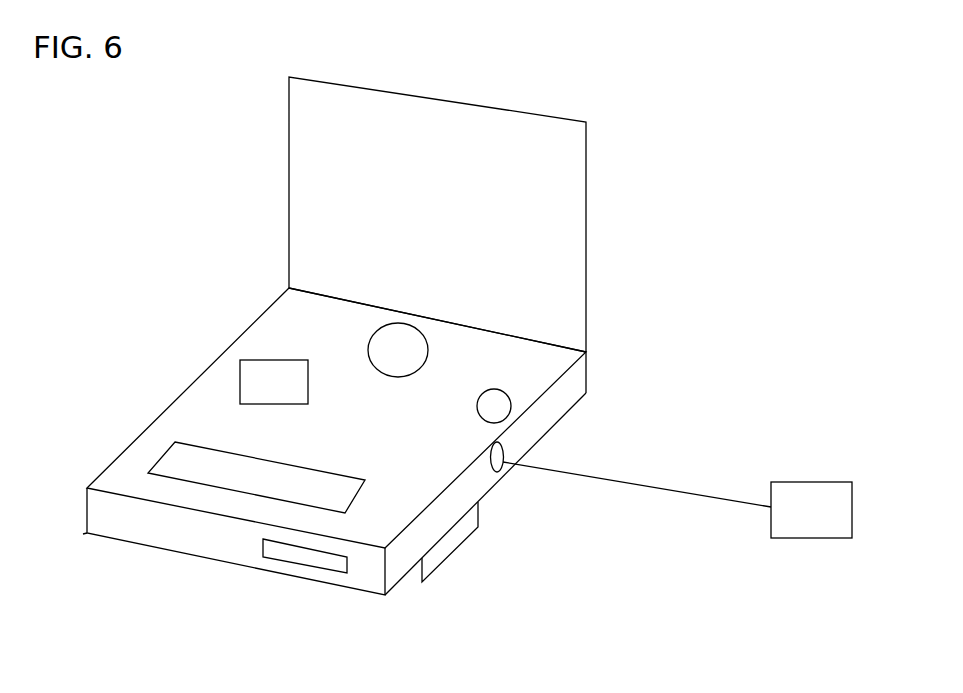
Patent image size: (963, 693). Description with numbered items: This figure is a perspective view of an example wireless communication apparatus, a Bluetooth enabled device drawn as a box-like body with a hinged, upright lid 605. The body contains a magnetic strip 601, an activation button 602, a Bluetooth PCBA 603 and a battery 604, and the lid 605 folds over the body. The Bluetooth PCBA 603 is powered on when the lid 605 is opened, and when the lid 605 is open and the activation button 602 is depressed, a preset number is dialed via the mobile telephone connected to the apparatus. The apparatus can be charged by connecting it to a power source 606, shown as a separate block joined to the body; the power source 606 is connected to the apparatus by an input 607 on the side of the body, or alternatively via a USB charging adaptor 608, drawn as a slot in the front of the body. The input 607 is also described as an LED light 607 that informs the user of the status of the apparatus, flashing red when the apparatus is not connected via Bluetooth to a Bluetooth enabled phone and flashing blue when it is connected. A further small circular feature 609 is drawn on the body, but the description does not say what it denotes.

The main body of information processing apparatus 601 is at (460, 548).
The speaker 602 is at (428, 350).
The keyboard 603 is at (185, 463).
The touch pad 604 is at (255, 375).
The display 605 is at (597, 207).
The external device 606 is at (817, 478).
The connector 607 is at (500, 466).
The card slot 608 is at (293, 555).
The microphone 609 is at (520, 407).